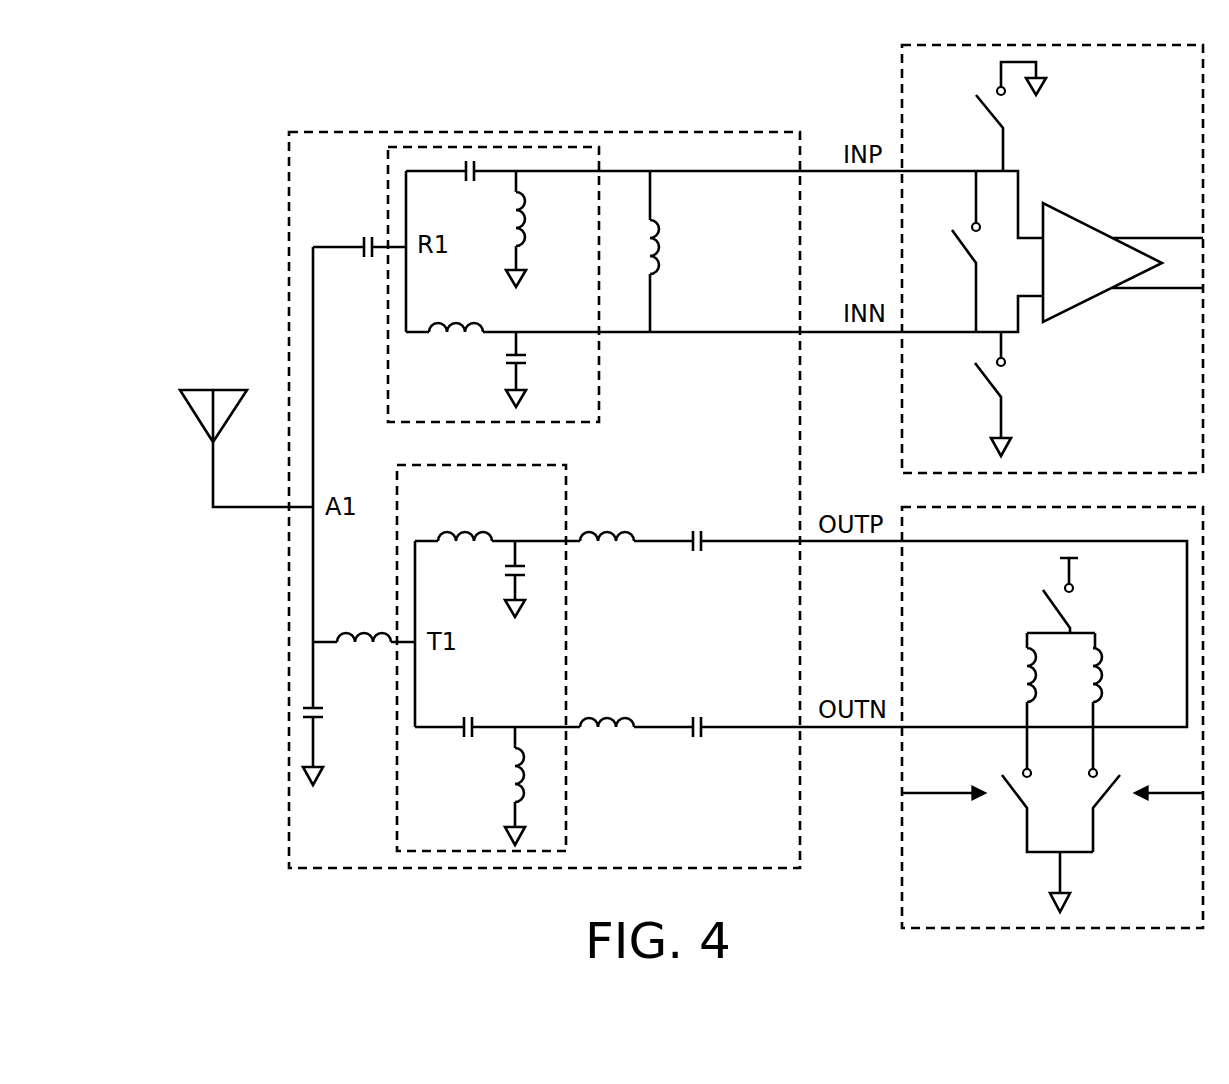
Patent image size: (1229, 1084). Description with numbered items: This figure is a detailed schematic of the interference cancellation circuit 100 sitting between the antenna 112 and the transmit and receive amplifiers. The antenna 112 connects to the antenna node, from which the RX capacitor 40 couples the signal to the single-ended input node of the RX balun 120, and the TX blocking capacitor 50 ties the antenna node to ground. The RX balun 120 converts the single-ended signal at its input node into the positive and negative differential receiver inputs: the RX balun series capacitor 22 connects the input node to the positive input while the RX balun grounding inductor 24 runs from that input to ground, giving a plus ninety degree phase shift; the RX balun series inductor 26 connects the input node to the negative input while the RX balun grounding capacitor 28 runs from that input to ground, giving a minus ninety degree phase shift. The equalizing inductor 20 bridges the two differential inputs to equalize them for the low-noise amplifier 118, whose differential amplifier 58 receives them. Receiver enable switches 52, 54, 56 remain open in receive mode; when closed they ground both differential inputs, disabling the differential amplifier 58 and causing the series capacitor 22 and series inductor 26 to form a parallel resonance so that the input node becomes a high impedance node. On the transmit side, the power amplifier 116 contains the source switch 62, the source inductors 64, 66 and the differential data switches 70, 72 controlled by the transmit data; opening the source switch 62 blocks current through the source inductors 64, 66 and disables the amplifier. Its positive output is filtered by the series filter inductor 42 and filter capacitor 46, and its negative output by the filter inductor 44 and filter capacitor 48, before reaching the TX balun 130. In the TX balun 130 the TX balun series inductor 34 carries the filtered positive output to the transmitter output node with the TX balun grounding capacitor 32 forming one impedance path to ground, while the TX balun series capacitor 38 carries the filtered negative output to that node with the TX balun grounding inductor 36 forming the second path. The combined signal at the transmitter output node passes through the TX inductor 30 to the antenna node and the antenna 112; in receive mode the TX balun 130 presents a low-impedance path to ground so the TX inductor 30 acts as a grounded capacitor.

The equalizing inductor 20 is at (658, 250).
The RX balun series capacitor 22 is at (462, 182).
The RX balun grounding inductor 24 is at (522, 220).
The RX balun series inductor 26 is at (456, 322).
The RX balun grounding capacitor 28 is at (510, 364).
The TX inductor 30 is at (364, 630).
The TX balun grounding capacitor 32 is at (510, 574).
The TX balun series inductor 34 is at (465, 532).
The TX balun grounding inductor 36 is at (524, 776).
The TX balun series capacitor 38 is at (462, 738).
The RX capacitor 40 is at (360, 256).
The filter inductor 42 is at (608, 532).
The filter inductor 44 is at (608, 718).
The filter capacitor 46 is at (690, 552).
The filter capacitor 48 is at (690, 738).
The TX blocking capacitor 50 is at (326, 716).
The receiver enable switch 52 is at (966, 252).
The receiver enable switch 54 is at (992, 118).
The receiver enable switch 56 is at (992, 386).
The differential amplifier 58 is at (1089, 282).
The source switch 62 is at (1050, 604).
The source inductor 64 is at (1036, 678).
The source inductor 66 is at (1104, 678).
The differential data switch 70 is at (1016, 794).
The differential data switch 72 is at (1106, 794).
The interference cancellation circuit 100 is at (748, 445).
The antenna 112 is at (196, 418).
The power amplifier 116 is at (1178, 898).
The low-noise amplifier 118 is at (1156, 417).
The RX balun 120 is at (586, 312).
The TX balun 130 is at (518, 682).